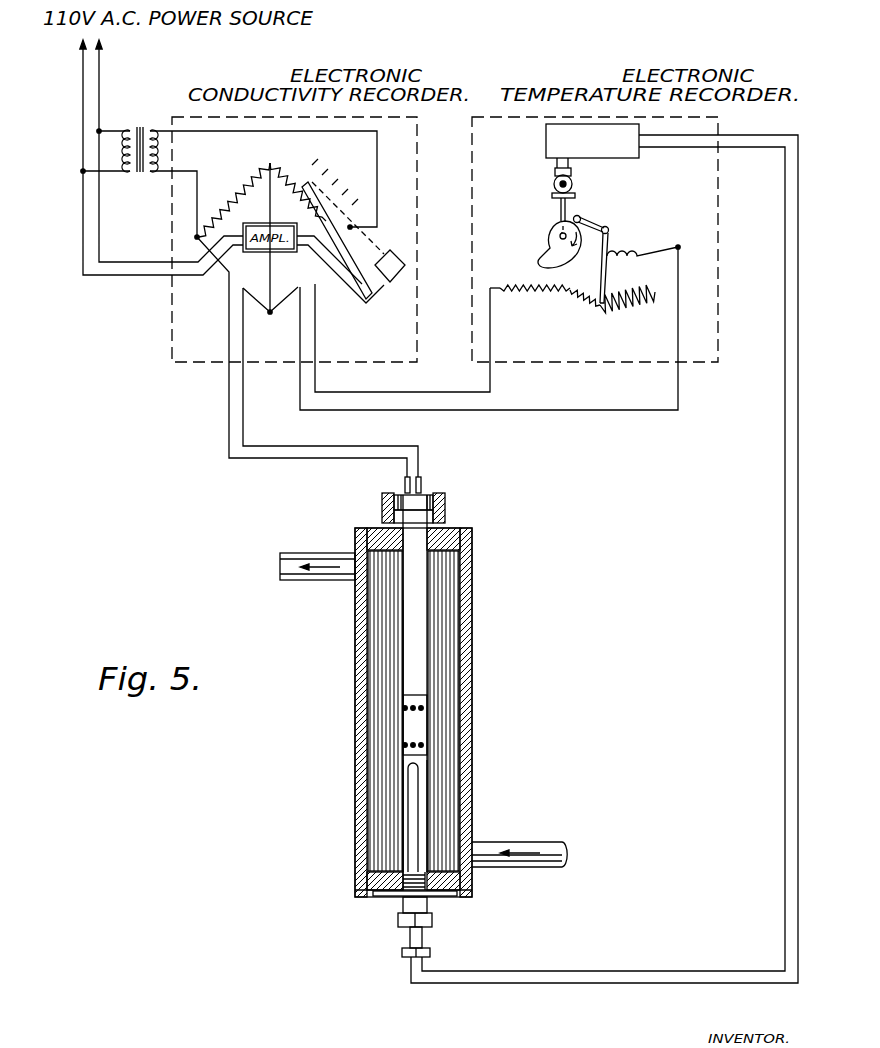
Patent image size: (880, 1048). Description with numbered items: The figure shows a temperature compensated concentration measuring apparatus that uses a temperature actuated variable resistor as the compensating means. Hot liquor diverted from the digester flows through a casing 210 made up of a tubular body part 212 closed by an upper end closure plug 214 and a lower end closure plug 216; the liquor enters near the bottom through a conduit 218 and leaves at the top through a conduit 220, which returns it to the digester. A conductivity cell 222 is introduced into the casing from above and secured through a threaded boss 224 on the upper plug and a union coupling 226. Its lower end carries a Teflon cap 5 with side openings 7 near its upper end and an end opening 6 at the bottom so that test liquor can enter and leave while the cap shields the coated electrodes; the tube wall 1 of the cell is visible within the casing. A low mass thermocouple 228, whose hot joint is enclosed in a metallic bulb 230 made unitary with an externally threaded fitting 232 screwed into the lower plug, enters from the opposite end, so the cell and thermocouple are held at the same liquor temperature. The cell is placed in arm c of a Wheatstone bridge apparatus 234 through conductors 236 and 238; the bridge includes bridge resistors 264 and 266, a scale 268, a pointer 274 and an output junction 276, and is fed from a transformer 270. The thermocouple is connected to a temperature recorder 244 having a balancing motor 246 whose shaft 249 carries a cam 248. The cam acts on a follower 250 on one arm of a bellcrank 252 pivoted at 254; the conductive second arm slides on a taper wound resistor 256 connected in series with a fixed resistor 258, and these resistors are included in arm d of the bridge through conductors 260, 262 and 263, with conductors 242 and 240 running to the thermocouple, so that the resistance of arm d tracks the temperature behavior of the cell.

The transformer 270 is at (137, 127).
The bridge resistor a 264 is at (243, 180).
The slide wire resistor b 266 is at (300, 180).
The conductivity scale 268 is at (305, 178).
The pointer / pen 274 is at (348, 210).
The bridge output junction 276 is at (270, 315).
The Wheatstone bridge apparatus 234 is at (225, 283).
The conductor 236 is at (229, 425).
The conductor 238 is at (244, 428).
The conductor 260 is at (430, 392).
The conductor 262 is at (560, 411).
The temperature recorder 244 is at (640, 160).
The balancing motor 246 is at (554, 182).
The shaft 249 is at (561, 203).
The cam 248 is at (553, 247).
The follower 250 is at (580, 217).
The bellcrank 252 is at (600, 225).
The pivot 254 is at (609, 231).
The conductor 263 is at (640, 252).
The fixed resistor 258 is at (515, 287).
The taper wound resistor 256 is at (601, 310).
The conductor to thermistor 242 is at (798, 755).
The conductor to thermistor 240 is at (785, 778).
The casing 210 is at (346, 745).
The tubular body part 212 is at (473, 676).
The upper end closure plug 214 is at (470, 530).
The lower end closure plug 216 is at (385, 897).
The union coupling 226 is at (382, 500).
The threaded boss 224 is at (390, 523).
The conductivity cell 222 is at (439, 622).
The tube wall 1 is at (405, 662).
The cap 5 is at (439, 728).
The side openings 7 is at (424, 708).
The end opening 6 is at (422, 746).
The metallic bulb 230 is at (410, 790).
The low mass thermocouple 228 is at (429, 821).
The conduit 220 is at (296, 582).
The conduit 218 is at (565, 842).
The externally threaded fitting 232 is at (426, 908).